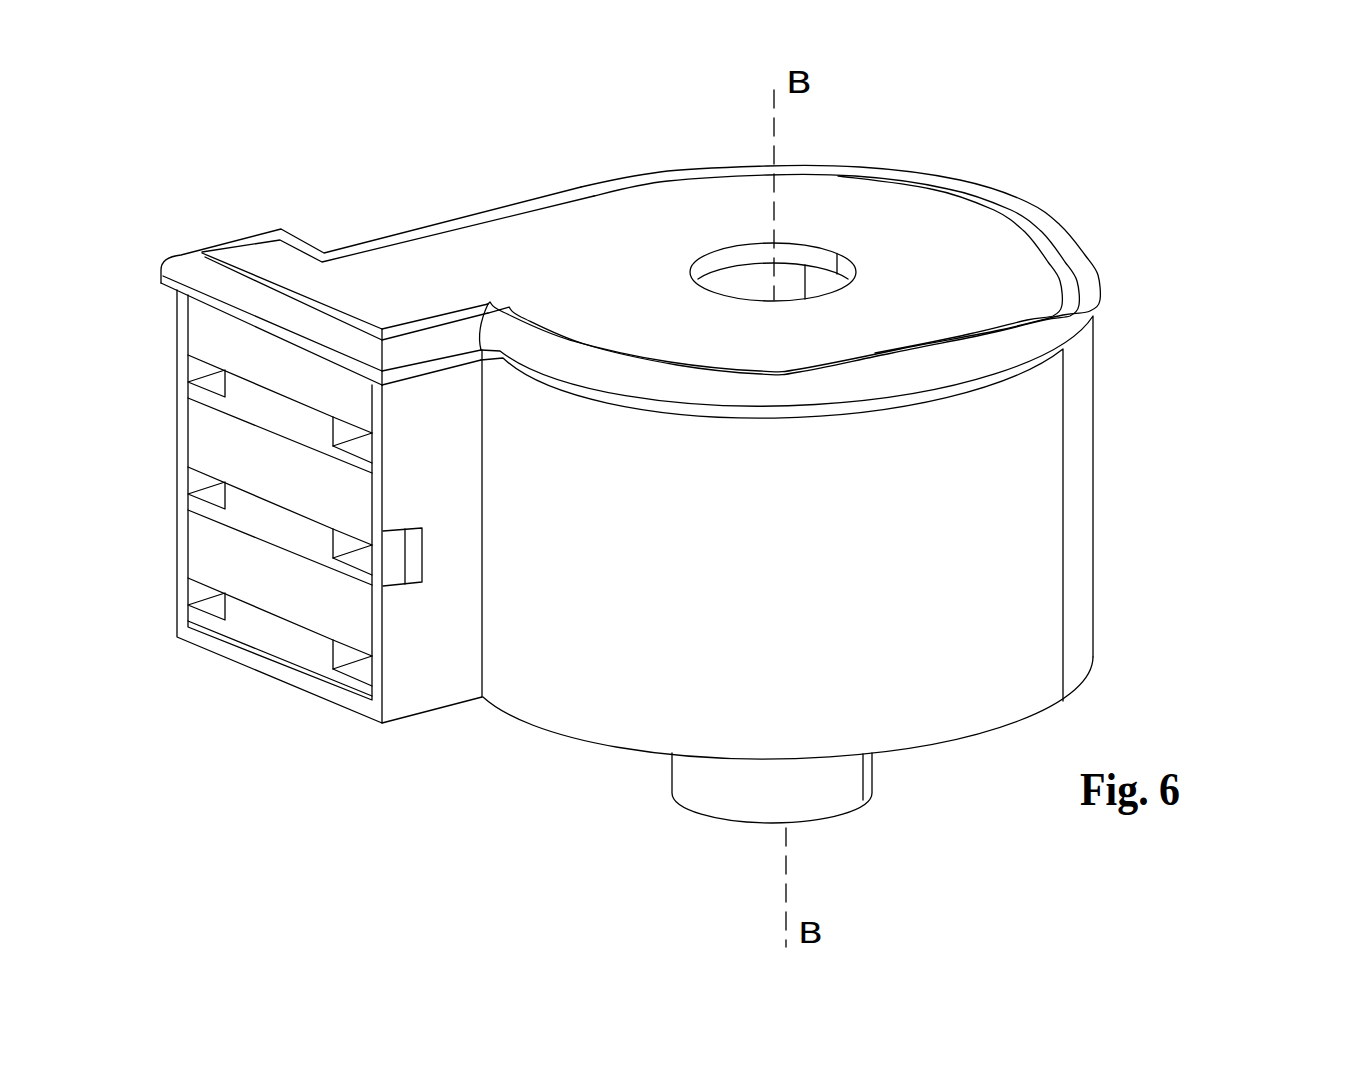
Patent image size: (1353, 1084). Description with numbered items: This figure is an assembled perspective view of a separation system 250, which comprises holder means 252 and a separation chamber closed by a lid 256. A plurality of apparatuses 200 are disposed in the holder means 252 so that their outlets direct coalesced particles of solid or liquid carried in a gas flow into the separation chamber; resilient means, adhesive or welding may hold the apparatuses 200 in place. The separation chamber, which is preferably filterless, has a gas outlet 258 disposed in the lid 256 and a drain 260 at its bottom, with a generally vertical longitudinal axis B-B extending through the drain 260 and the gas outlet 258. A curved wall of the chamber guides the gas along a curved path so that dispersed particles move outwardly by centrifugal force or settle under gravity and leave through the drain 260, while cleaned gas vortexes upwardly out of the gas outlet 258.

The apparatuses 200 is at (207, 332).
The separation system 250 is at (904, 482).
The holder means 252 is at (428, 687).
The lid 256 is at (1032, 262).
The gas outlet 258 is at (773, 267).
The drain 260 is at (828, 793).